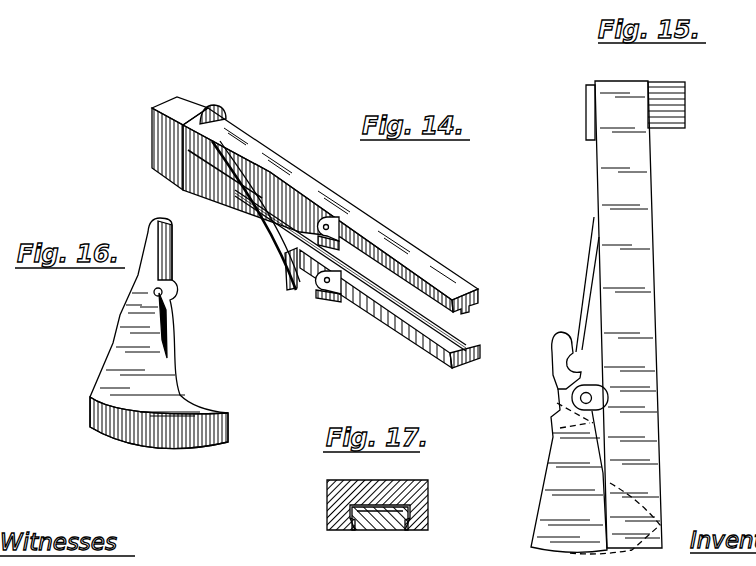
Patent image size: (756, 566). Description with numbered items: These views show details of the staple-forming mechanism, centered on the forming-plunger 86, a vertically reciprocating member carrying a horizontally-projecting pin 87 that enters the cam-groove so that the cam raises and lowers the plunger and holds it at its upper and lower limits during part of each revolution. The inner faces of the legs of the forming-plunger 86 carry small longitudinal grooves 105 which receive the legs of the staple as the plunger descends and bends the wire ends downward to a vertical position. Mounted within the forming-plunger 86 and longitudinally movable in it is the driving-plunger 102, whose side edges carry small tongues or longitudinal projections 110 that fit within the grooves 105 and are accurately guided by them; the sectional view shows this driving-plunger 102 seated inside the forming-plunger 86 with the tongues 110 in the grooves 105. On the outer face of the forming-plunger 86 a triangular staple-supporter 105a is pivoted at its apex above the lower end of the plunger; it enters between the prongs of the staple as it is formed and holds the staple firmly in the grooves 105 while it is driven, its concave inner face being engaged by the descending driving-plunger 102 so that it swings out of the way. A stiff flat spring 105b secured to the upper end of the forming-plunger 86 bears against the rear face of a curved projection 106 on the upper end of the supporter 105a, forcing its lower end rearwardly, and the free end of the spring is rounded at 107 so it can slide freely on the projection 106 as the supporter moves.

In FIG. 14, the forming-plunger 86 is at (425, 264).
In FIG. 15, the forming-plunger 86 is at (647, 263).
In FIG. 17, the forming-plunger 86 is at (422, 489).
In FIG. 14, the horizontally-projecting pin 87 is at (226, 120).
In FIG. 15, the horizontally-projecting pin 87 is at (663, 128).
In FIG. 14, the longitudinal grooves 105 is at (403, 320).
In FIG. 17, the longitudinal grooves 105 is at (352, 521).
In FIG. 16, the staple-supporter 105a is at (111, 376).
In FIG. 15, the staple-supporter 105a is at (566, 478).
In FIG. 14, the flat spring 105b is at (258, 238).
In FIG. 15, the flat spring 105b is at (592, 268).
In FIG. 16, the curved projection 106 is at (160, 265).
In FIG. 15, the curved projection 106 is at (556, 336).
In FIG. 14, the rounded free end of spring 107 is at (288, 289).
In FIG. 15, the rounded free end of spring 107 is at (570, 372).
In FIG. 17, the driving-plunger 102 is at (378, 531).
In FIG. 17, the tongues or longitudinal projections 110 is at (351, 528).